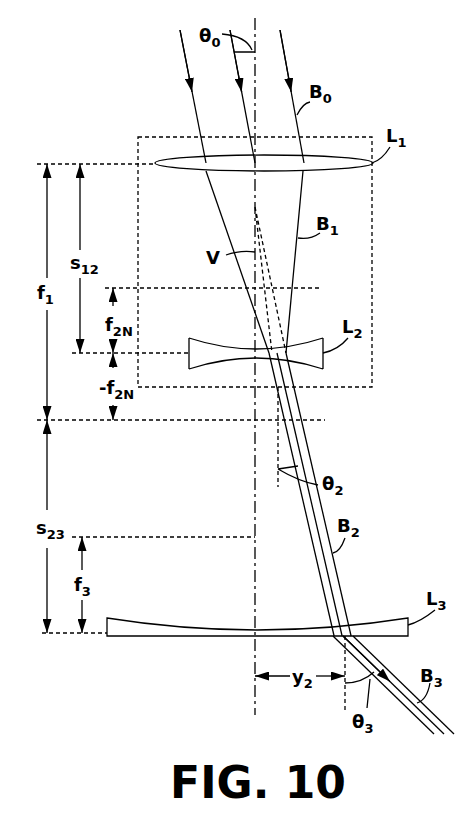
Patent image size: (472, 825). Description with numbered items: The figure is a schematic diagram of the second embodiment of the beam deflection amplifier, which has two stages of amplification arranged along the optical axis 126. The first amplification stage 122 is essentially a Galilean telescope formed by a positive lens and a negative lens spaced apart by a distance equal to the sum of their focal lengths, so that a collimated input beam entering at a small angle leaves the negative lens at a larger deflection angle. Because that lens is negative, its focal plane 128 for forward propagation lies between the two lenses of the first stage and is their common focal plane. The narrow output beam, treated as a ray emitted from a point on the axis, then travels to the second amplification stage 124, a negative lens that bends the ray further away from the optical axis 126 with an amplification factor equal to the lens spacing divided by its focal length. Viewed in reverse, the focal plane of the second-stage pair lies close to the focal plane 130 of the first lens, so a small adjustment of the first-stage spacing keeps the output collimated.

The first amplification stage 122 is at (372, 280).
The second amplification stage 124 is at (190, 626).
The optical axis 126 is at (254, 584).
The focal plane of lens L2N 128 is at (305, 287).
The focal plane of lens L1 130 is at (222, 422).